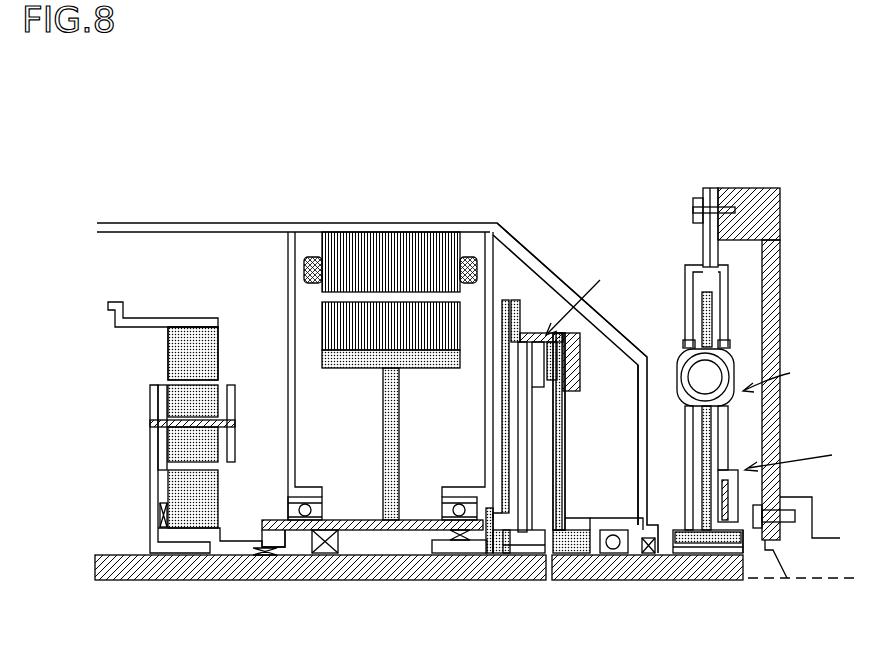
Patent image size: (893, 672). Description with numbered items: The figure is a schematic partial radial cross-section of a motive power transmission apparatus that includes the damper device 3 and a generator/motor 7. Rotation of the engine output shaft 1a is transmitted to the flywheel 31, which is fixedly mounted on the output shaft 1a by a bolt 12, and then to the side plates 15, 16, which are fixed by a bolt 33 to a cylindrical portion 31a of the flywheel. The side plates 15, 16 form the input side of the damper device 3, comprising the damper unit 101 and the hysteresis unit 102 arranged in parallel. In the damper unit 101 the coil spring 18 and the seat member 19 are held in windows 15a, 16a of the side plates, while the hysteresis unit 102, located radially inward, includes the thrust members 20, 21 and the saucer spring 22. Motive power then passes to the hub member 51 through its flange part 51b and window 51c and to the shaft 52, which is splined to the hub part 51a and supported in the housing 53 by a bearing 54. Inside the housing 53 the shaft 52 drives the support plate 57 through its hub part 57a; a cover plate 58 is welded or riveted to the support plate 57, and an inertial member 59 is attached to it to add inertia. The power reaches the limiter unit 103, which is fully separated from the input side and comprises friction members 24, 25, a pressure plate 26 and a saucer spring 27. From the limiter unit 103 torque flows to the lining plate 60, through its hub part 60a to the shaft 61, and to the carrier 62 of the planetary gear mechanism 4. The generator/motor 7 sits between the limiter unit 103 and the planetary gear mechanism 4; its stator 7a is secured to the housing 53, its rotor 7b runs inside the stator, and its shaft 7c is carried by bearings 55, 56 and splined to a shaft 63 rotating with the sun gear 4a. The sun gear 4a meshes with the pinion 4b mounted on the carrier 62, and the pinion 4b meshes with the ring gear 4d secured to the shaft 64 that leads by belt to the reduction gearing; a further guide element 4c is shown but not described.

The output shaft 1a is at (828, 546).
The damper device 3 is at (778, 365).
The planetary gear mechanism 4 is at (188, 304).
The sun gear 4a is at (219, 486).
The pinion 4b is at (166, 390).
The right guide plate 4c is at (235, 445).
The ring gear 4d is at (219, 350).
The generator/motor 7 is at (390, 340).
The stator 7a is at (390, 236).
The rotor 7b is at (345, 350).
The shaft 7c is at (400, 410).
The bolt 12 is at (790, 510).
The side plate 15 is at (724, 278).
The window 15a is at (728, 345).
The side plate 16 is at (686, 278).
The window 16a is at (684, 345).
The coil spring 18 is at (680, 372).
The seat member 19 is at (730, 365).
The thrust member 20 is at (685, 480).
The thrust member 21 is at (732, 478).
The saucer spring 22 is at (728, 500).
The friction member 24 is at (512, 383).
The friction member 25 is at (535, 332).
The pressure plate 26 is at (566, 405).
The saucer spring 27 is at (552, 345).
The flywheel 31 is at (781, 300).
The cylindrical portion 31a is at (748, 190).
The bolt 33 is at (697, 207).
The hub member 51 is at (745, 545).
The hub part 51a is at (695, 547).
The flange part 51b is at (711, 437).
The window 51c is at (721, 418).
The shaft 52 is at (648, 553).
The housing 53 is at (521, 248).
The bearing 54 is at (613, 553).
The bearing 55 is at (459, 497).
The bearing 56 is at (305, 497).
The support plate 57 is at (567, 450).
The hub part 57a is at (575, 530).
The cover plate 58 is at (513, 300).
The inertial member 59 is at (581, 352).
The lining plate 60 is at (527, 472).
The hub part 60a is at (520, 555).
The shaft 61 is at (386, 578).
The carrier 62 is at (150, 470).
The shaft 63 is at (240, 540).
The shaft 64 is at (151, 317).
The damper unit 101 is at (792, 373).
The hysteresis unit 102 is at (807, 457).
The limiter unit 103 is at (589, 298).